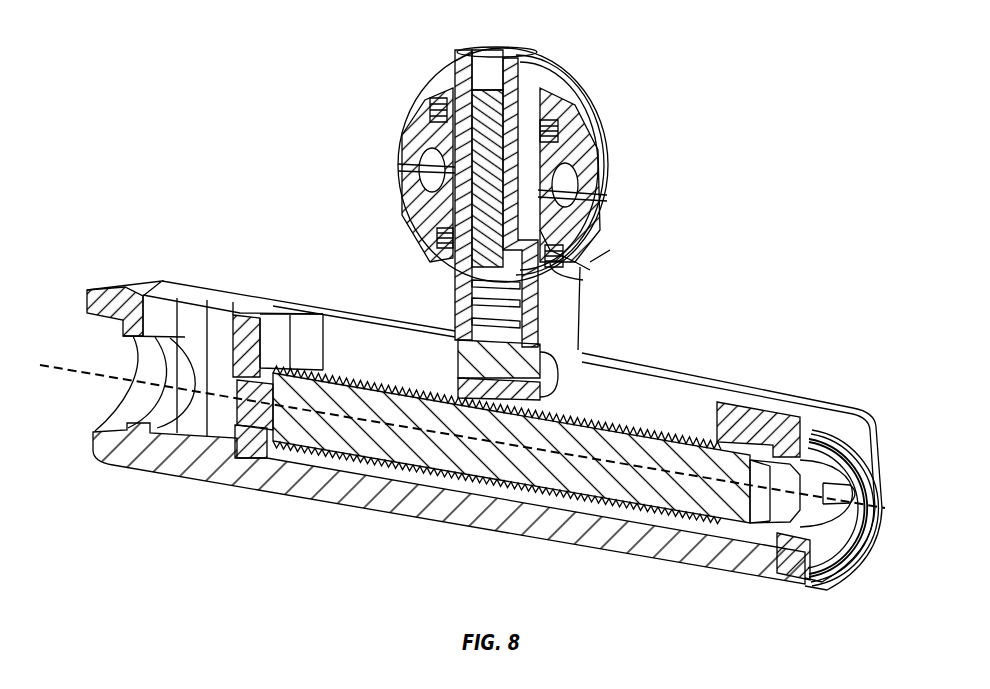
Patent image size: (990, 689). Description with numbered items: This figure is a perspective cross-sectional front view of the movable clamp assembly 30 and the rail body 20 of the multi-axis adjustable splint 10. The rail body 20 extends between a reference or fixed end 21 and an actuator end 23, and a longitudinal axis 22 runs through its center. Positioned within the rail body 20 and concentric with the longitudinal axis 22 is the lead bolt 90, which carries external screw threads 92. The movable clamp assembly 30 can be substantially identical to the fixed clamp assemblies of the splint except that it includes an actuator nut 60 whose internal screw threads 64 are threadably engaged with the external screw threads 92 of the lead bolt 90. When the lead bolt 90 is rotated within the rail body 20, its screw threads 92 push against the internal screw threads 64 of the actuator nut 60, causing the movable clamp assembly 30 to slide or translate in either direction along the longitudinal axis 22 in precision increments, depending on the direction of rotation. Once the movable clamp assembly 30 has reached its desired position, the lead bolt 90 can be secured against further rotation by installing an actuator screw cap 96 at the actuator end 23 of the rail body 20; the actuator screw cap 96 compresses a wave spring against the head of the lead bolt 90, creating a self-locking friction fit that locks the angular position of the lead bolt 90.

The multi-axis adjustable splint 10 is at (629, 76).
The rail body 20 is at (143, 287).
The fixed end 21 is at (82, 294).
The longitudinal axis 22 is at (76, 373).
The actuator end 23 is at (895, 446).
The movable clamp assembly 30 is at (403, 114).
The actuator nut 60 is at (453, 298).
The internal screw threads 64 is at (500, 468).
The lead bolt 90 is at (693, 440).
The external screw threads 92 is at (598, 414).
The actuator screw cap 96 is at (833, 540).